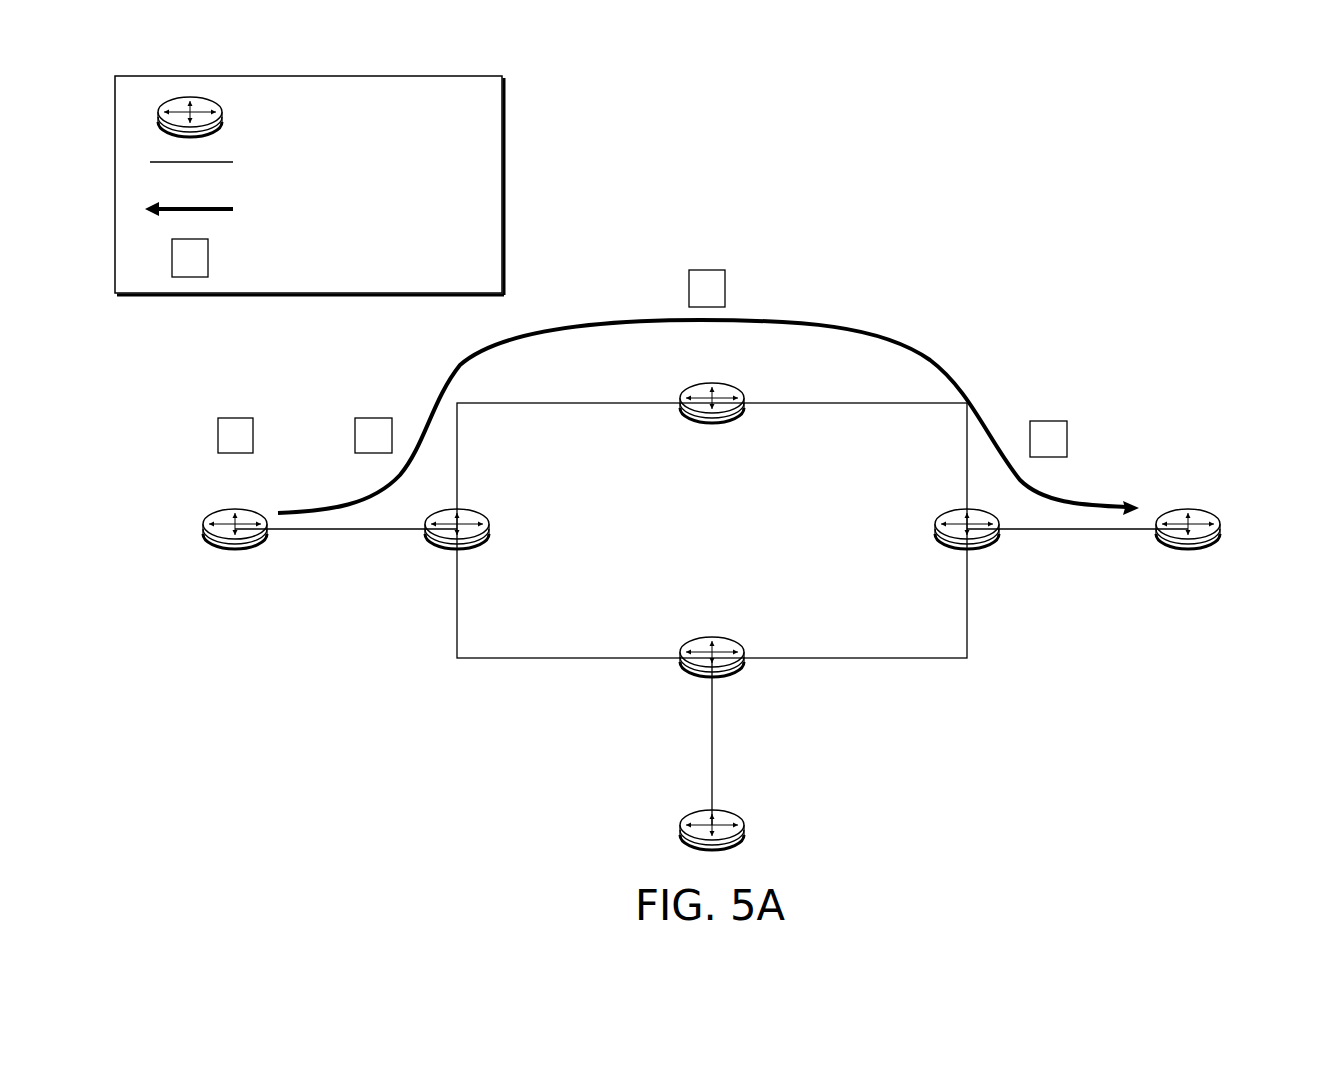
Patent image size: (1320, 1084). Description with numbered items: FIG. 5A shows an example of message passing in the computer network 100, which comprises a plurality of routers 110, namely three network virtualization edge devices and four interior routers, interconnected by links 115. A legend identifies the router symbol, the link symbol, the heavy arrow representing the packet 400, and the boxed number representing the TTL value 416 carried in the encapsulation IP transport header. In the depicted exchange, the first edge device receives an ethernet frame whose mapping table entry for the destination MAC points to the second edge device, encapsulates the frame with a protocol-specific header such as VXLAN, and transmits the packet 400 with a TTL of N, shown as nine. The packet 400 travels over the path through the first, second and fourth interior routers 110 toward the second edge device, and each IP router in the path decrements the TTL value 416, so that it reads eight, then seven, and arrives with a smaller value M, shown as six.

The computer network 100 is at (1206, 136).
The routers 110 is at (689, 473).
The links 115 is at (669, 488).
The packet 400 is at (642, 356).
The TTL value 416 is at (619, 348).